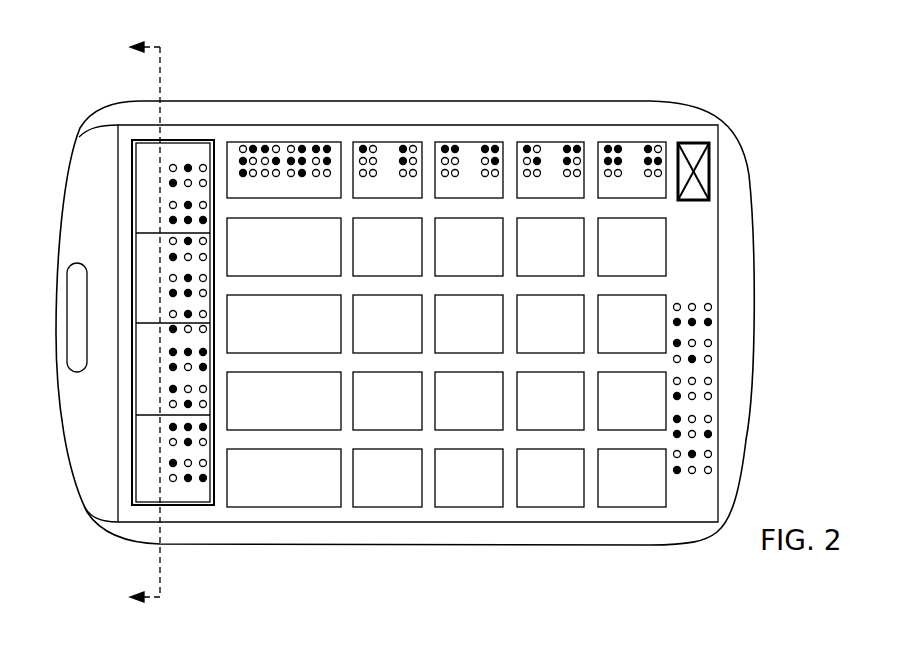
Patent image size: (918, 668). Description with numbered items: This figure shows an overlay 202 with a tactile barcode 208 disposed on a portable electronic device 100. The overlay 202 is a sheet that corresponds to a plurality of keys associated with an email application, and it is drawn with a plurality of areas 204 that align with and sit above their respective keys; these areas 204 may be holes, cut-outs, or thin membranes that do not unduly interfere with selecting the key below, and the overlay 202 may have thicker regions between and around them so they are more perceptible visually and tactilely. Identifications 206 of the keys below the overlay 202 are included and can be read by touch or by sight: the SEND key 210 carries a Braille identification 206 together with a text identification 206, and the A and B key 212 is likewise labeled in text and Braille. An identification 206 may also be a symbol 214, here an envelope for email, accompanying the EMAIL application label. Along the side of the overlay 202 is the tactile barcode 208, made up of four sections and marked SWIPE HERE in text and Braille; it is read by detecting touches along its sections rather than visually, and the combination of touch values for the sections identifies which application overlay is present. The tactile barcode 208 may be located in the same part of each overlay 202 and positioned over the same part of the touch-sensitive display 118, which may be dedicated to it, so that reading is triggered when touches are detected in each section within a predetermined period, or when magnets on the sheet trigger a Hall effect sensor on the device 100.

The portable electronic device 100 is at (17, 541).
The touch-sensitive display 118 is at (612, 488).
The overlay 202 is at (213, 130).
The areas 204 is at (290, 490).
The identifications 206 is at (256, 148).
The tactile barcode 208 is at (167, 488).
The SEND key 210 is at (162, 78).
The A and B key 212 is at (421, 148).
The symbol 214 is at (703, 143).